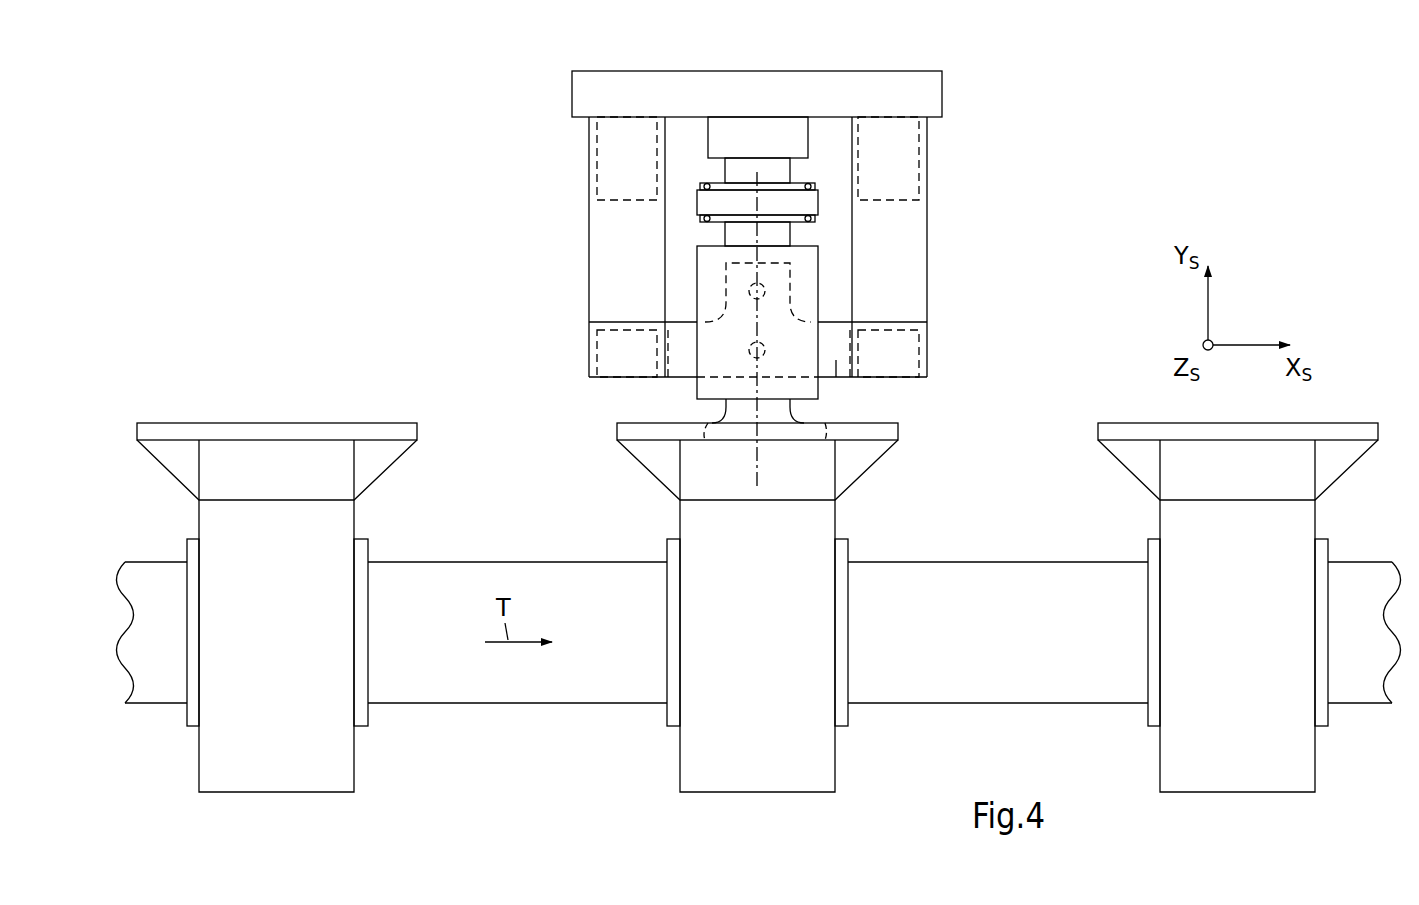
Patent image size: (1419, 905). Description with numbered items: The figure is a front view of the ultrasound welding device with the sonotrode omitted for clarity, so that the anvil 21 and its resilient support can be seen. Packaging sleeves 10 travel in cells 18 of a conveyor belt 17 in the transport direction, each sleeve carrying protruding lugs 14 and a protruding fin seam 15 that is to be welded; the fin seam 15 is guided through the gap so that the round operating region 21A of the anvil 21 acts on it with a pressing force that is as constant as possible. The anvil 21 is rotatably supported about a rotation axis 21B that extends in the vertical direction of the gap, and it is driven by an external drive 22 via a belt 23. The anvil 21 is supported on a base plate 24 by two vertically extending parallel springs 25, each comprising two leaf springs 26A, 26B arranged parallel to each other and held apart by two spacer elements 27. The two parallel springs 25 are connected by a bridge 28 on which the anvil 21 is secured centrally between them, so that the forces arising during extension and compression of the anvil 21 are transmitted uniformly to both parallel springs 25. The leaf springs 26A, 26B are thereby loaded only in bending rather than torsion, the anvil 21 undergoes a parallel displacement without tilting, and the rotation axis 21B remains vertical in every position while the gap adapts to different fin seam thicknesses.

The packaging sleeve 10 is at (214, 393).
The lugs 14 is at (177, 459).
The fin seam 15 is at (297, 432).
The conveyor belt 17 is at (447, 685).
The cells 18 is at (195, 710).
The anvil 21 is at (710, 270).
The operating region of the anvil 21A is at (705, 432).
The rotation axis of the anvil 21B is at (757, 465).
The external drive 22 is at (733, 131).
The belt 23 is at (772, 202).
The base plate 24 is at (890, 92).
The parallel springs 25 is at (573, 208).
The leaf spring 26A is at (613, 283).
The leaf spring 26B is at (903, 285).
The spacer elements 27 is at (613, 147).
The bridge 28 is at (836, 377).